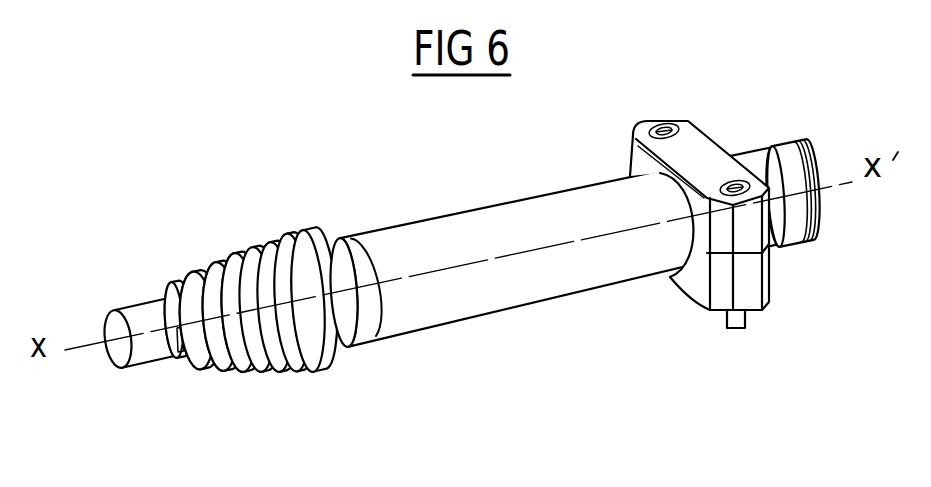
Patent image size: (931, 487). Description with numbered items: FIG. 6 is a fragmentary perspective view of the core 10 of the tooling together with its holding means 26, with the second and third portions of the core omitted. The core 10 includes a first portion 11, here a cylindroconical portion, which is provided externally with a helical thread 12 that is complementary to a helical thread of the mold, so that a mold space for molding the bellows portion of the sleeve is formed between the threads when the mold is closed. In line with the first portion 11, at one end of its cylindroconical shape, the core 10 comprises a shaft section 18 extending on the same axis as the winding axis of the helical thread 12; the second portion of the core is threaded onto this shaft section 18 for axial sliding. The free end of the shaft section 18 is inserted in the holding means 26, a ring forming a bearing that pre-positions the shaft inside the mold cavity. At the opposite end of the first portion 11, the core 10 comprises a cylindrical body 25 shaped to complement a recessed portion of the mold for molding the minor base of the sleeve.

The core 10 is at (435, 328).
The first portion 11 is at (262, 235).
The helical thread 12 is at (212, 258).
The shaft section 18 is at (573, 272).
The cylindrical body 25 is at (132, 317).
The holding means 26 is at (752, 235).